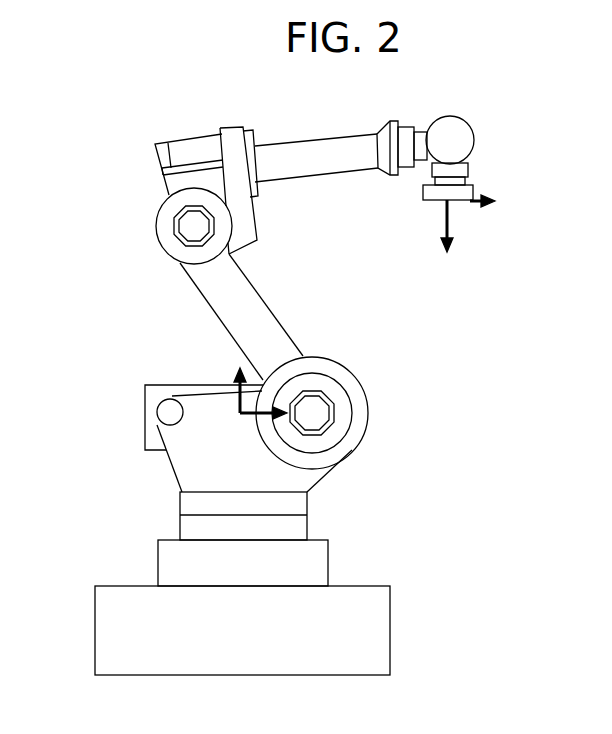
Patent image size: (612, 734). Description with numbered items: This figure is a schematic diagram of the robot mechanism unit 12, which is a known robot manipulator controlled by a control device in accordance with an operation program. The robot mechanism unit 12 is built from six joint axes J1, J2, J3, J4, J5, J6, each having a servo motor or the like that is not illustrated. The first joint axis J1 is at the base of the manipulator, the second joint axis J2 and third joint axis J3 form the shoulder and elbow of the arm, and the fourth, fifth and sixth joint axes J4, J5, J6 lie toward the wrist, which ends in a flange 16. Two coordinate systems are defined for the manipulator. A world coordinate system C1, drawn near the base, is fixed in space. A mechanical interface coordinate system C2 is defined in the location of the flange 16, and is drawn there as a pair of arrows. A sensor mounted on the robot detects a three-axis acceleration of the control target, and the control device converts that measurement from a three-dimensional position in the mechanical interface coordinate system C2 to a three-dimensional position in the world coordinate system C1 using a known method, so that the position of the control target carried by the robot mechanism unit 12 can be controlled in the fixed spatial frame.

The robot mechanism unit 12 is at (103, 185).
The joint axis J1 is at (225, 530).
The joint axis J2 is at (352, 428).
The joint axis J3 is at (152, 238).
The joint axis J4 is at (382, 151).
The joint axis J5 is at (473, 115).
The joint axis J6 is at (451, 158).
The flange 16 is at (432, 200).
The world coordinate system C1 is at (228, 395).
The mechanical interface coordinate system C2 is at (465, 200).